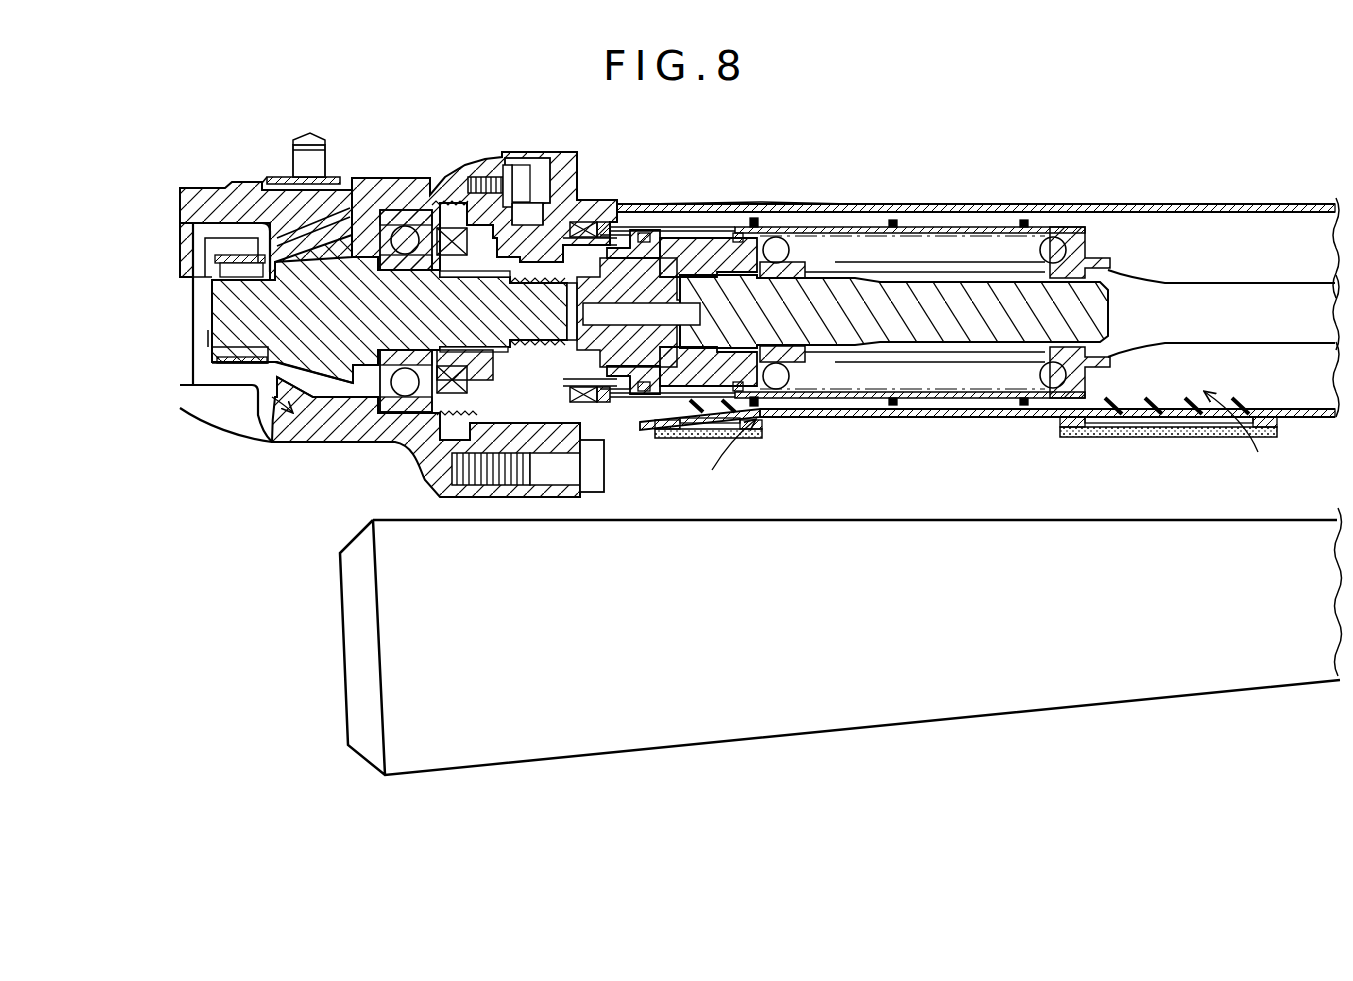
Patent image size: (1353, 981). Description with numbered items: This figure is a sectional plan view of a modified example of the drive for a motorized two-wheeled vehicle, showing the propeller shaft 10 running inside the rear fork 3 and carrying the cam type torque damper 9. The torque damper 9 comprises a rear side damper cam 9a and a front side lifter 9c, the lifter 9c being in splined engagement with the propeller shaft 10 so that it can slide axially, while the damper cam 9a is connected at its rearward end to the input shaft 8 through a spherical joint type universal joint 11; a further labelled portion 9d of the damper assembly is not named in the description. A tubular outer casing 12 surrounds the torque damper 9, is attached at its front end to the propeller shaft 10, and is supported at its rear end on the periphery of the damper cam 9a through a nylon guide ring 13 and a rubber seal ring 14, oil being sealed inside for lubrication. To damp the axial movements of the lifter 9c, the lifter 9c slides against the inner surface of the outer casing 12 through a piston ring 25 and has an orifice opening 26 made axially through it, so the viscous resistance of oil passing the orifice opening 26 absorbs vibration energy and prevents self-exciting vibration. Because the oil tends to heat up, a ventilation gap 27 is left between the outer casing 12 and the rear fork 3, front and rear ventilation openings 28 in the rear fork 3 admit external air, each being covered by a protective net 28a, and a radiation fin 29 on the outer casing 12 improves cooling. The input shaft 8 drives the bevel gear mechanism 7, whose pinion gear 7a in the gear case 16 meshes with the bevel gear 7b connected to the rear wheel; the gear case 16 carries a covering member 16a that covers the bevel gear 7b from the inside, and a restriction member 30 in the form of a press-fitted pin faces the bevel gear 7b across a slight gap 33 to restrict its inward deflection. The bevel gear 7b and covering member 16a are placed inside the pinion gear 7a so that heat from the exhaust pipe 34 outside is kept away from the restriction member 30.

The rear fork 3 is at (1160, 204).
The bevel gear mechanism 7 is at (270, 428).
The pinion gear 7a is at (313, 390).
The bevel gear 7b is at (248, 200).
The input shaft 8 is at (398, 320).
The cam type torque damper 9 is at (659, 236).
The damper cam 9a is at (632, 230).
The lifter 9c is at (688, 240).
The bearing portion 9d is at (869, 248).
The propeller shaft 10 is at (1221, 300).
The universal joint 11 is at (540, 215).
The outer casing 12 is at (818, 226).
The guide ring 13 is at (597, 220).
The seal ring 14 is at (578, 222).
The gear case 16 is at (356, 432).
The covering member 16a is at (364, 160).
The piston ring 25 is at (752, 218).
The orifice opening 26 is at (762, 412).
The ventilation gap 27 is at (915, 416).
The ventilation opening 28 is at (1140, 418).
The protective net 28a is at (1196, 440).
The radiation fin 29 is at (1022, 222).
The restriction member 30 is at (306, 150).
The gap 33 is at (268, 188).
The exhaust pipe 34 is at (858, 706).